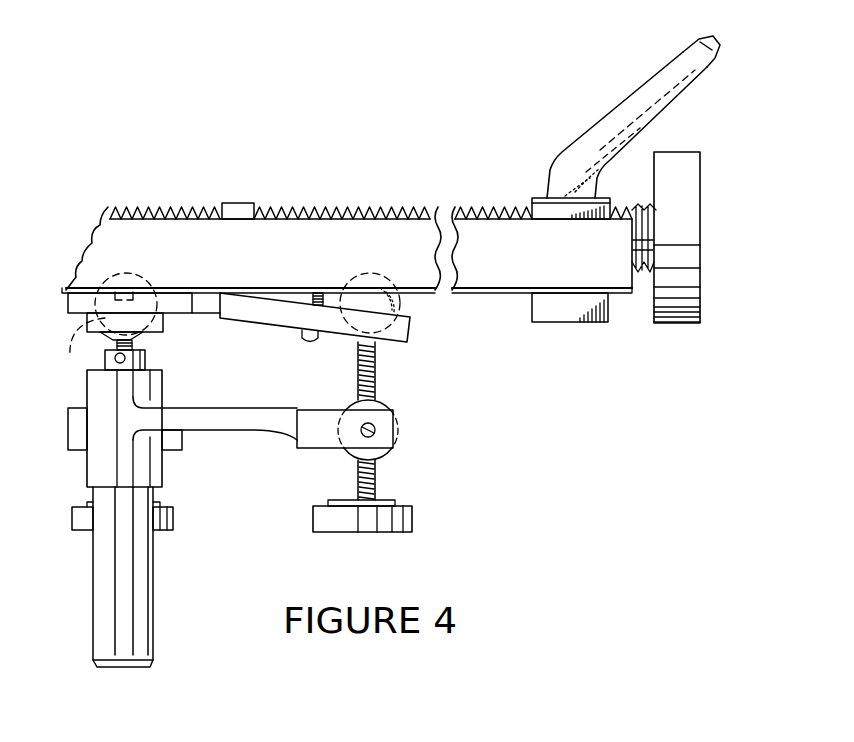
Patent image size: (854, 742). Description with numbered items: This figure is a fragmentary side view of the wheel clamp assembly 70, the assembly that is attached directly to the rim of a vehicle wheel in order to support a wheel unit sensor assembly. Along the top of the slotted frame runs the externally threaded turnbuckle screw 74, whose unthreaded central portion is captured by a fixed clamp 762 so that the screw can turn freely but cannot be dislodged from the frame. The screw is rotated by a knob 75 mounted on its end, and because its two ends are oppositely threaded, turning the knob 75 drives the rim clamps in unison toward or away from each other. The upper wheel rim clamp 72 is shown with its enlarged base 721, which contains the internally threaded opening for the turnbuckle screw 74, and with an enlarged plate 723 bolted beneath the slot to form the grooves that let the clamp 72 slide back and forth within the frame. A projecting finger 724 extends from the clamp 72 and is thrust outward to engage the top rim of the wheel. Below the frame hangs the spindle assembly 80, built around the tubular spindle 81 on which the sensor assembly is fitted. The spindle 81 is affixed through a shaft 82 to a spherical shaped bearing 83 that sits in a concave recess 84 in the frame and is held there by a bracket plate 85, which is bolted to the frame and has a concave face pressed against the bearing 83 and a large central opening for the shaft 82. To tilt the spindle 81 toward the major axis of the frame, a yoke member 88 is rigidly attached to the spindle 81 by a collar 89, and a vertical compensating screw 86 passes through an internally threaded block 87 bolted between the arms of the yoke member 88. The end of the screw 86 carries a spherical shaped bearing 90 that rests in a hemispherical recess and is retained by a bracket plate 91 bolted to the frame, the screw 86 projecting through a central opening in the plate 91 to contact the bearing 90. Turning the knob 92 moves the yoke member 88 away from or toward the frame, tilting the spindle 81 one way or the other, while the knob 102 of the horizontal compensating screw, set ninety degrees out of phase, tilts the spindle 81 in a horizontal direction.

The wheel clamp assembly 70 is at (113, 202).
The turnbuckle screw 74 is at (164, 205).
The fixed clamp 762 is at (243, 203).
The enlarged base 721 is at (538, 196).
The wheel rim clamp 72 is at (633, 117).
The projecting finger 724 is at (707, 65).
The enlarged plate 723 is at (562, 322).
The knob 75 is at (678, 323).
The bracket plate 85 is at (178, 317).
The concave recess 84 is at (130, 278).
The spherical shaped bearing 83 is at (87, 343).
The shaft 82 is at (133, 340).
The spindle assembly 80 is at (164, 539).
The collar 89 is at (163, 465).
The tubular spindle 81 is at (155, 605).
The knob 102 is at (173, 513).
The yoke member 88 is at (245, 408).
The block 87 is at (380, 404).
The vertical compensating screw 86 is at (376, 474).
The knob 92 is at (398, 532).
The bracket plate 91 is at (412, 332).
The spherical shaped bearing 90 is at (402, 307).